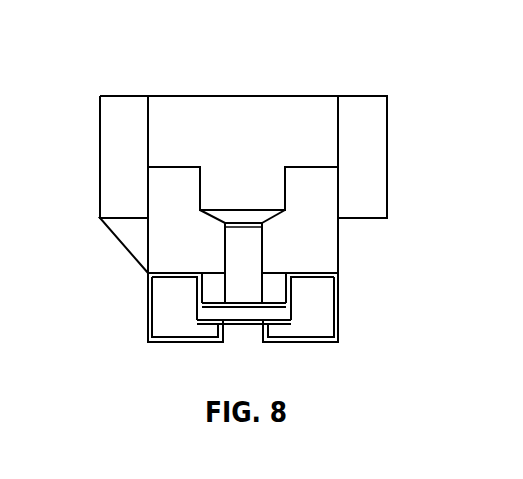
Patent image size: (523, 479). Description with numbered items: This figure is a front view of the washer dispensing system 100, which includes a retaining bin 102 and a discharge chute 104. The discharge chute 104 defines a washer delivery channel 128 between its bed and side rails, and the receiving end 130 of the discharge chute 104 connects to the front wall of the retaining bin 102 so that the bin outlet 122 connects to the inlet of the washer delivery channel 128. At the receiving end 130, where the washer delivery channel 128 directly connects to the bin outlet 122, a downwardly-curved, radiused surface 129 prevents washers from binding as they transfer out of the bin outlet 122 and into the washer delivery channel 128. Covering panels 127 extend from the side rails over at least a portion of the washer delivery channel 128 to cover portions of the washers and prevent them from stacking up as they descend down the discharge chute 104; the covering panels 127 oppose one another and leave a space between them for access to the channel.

The washer dispensing system 100 is at (237, 178).
The retaining bin 102 is at (258, 159).
The discharge chute 104 is at (341, 313).
The bin outlet 122 is at (222, 212).
The covering panels 127 is at (162, 242).
The washer delivery channel 128 is at (258, 251).
The downwardly-curved, radiused surface 129 is at (255, 224).
The receiving end 130 is at (252, 212).